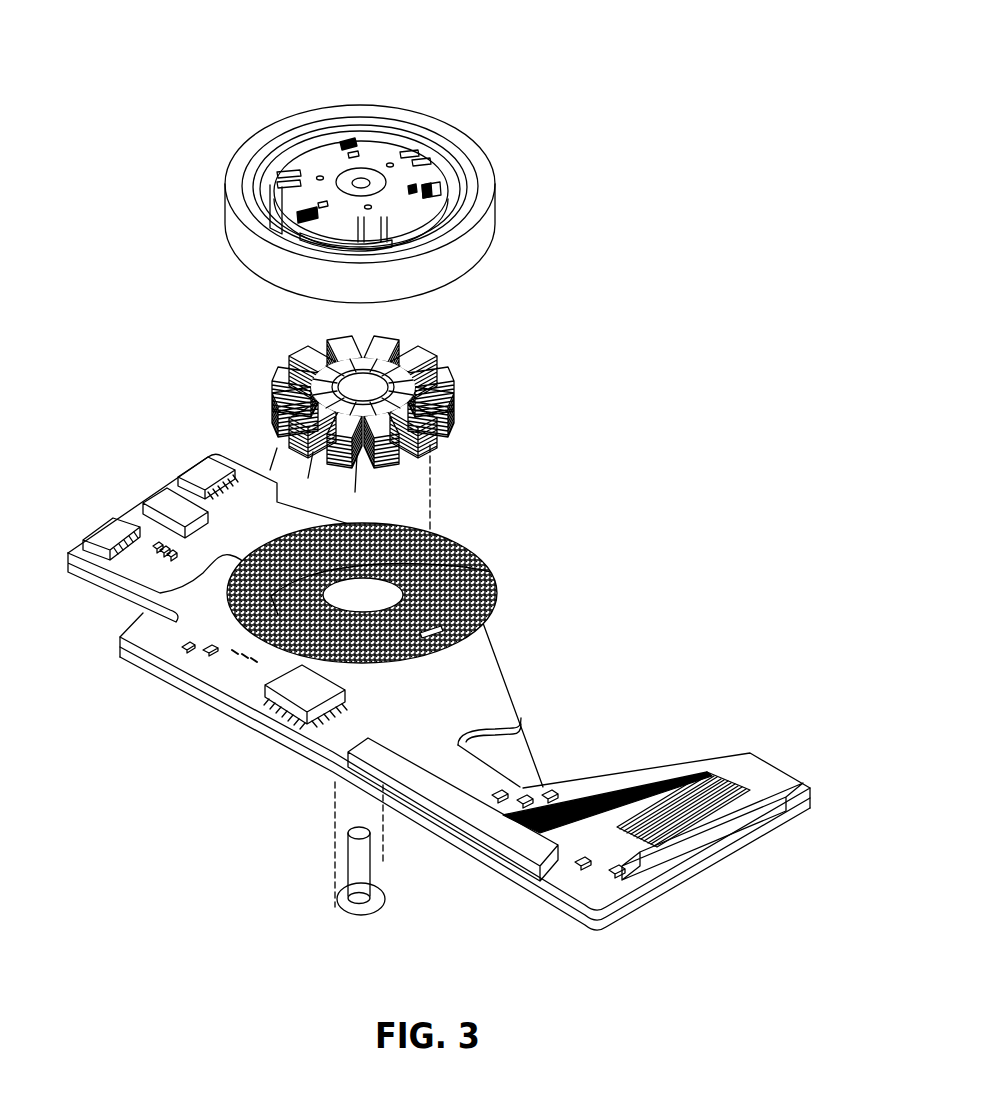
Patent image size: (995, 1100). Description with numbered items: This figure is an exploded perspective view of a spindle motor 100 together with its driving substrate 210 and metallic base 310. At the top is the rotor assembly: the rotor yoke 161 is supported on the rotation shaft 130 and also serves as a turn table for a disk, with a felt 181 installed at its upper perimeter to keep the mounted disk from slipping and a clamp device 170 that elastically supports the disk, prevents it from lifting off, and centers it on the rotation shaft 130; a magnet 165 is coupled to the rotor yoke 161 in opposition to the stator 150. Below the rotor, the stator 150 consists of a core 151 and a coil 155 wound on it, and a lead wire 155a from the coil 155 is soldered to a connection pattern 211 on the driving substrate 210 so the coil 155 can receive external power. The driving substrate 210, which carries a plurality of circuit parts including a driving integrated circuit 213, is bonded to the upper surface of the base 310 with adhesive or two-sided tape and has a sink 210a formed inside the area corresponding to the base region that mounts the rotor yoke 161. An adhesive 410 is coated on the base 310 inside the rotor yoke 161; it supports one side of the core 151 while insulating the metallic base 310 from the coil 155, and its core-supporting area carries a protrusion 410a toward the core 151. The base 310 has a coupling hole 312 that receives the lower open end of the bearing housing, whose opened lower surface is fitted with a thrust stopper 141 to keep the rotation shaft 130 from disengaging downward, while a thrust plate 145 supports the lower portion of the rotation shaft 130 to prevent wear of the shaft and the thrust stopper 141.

The spindle motor 100 is at (252, 347).
The rotation shaft 130 is at (361, 174).
The thrust stopper 141 is at (377, 905).
The thrust plate 145 is at (358, 834).
The stator 150 is at (612, 322).
The core 151 is at (395, 383).
The coil 155 is at (428, 348).
The lead wire 155a is at (422, 458).
The rotor yoke 161 is at (490, 232).
The magnet 165 is at (677, 209).
The clamp device 170 is at (323, 167).
The felt 181 is at (487, 162).
The driving substrate 210 is at (338, 735).
The sink 210a is at (173, 610).
The connection pattern 211 is at (258, 661).
The driving integrated circuit 213 is at (300, 688).
The base 310 is at (517, 763).
The coupling hole 312 is at (384, 605).
The adhesive 410 is at (482, 589).
The protrusion 410a is at (490, 572).